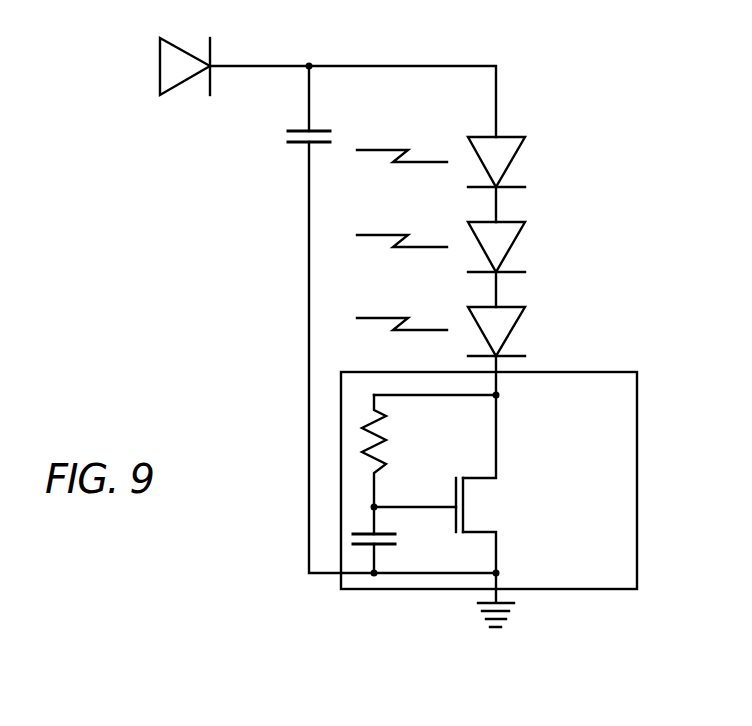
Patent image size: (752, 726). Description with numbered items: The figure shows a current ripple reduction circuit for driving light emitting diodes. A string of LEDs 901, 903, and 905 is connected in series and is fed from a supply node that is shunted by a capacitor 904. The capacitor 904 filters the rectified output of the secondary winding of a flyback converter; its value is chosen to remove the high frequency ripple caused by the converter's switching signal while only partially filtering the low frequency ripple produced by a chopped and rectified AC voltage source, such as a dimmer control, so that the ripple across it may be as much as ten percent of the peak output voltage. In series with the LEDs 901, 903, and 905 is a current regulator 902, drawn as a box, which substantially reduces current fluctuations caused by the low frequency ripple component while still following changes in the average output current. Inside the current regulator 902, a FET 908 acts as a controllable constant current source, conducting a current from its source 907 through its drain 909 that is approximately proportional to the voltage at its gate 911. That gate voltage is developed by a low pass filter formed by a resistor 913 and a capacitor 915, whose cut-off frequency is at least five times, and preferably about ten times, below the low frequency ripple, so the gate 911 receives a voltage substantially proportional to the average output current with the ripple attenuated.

The LED 901 is at (505, 137).
The current regulator 902 is at (577, 372).
The LED 903 is at (505, 222).
The capacitor 904 is at (323, 131).
The LED 905 is at (173, 38).
The source 907 is at (496, 440).
The FET 908 is at (490, 506).
The drain 909 is at (496, 552).
The gate 911 is at (400, 507).
The resistor 913 is at (364, 460).
The capacitor 915 is at (352, 534).